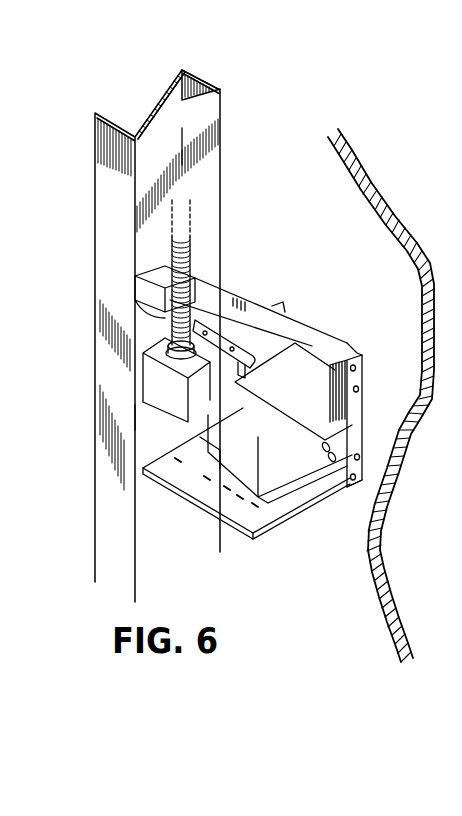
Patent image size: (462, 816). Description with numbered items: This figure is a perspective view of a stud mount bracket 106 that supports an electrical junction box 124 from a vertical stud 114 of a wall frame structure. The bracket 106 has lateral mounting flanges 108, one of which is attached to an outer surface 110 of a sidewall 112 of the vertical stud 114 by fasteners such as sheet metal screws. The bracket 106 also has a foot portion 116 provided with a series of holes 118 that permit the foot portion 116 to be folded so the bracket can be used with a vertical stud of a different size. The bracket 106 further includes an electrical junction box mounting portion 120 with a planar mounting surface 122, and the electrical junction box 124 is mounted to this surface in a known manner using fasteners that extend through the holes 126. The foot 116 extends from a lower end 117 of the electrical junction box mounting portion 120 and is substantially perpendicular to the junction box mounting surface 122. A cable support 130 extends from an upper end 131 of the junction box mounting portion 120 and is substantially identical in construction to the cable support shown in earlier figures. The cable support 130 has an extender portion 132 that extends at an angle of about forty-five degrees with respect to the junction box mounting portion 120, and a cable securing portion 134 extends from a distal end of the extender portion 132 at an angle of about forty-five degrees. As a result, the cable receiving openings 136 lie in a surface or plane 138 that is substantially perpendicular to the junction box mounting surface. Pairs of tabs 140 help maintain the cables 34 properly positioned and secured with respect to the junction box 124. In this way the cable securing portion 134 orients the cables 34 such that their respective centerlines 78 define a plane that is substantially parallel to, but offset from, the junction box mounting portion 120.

The bracket 106 is at (258, 550).
The lateral mounting flanges 108 is at (197, 373).
The outer surface 110 is at (216, 79).
The sidewall 112 is at (182, 88).
The vertical stud 114 is at (201, 74).
The foot portion 116 is at (177, 443).
The lower end 117 is at (347, 490).
The holes 118 is at (225, 488).
The electrical junction box mounting portion 120 is at (342, 402).
The planar mounting surface 122 is at (335, 466).
The electrical junction box 124 is at (143, 412).
The holes 126 is at (343, 378).
The cable support 130 is at (284, 353).
The upper end 131 is at (357, 353).
The extender portion 132 is at (315, 337).
The cable securing portion 134 is at (265, 366).
The cable receiving openings 136 is at (257, 310).
The plane 138 is at (278, 312).
The pairs of tabs 140 is at (173, 313).
The cables 34 is at (193, 250).
The centerlines 78 is at (183, 147).